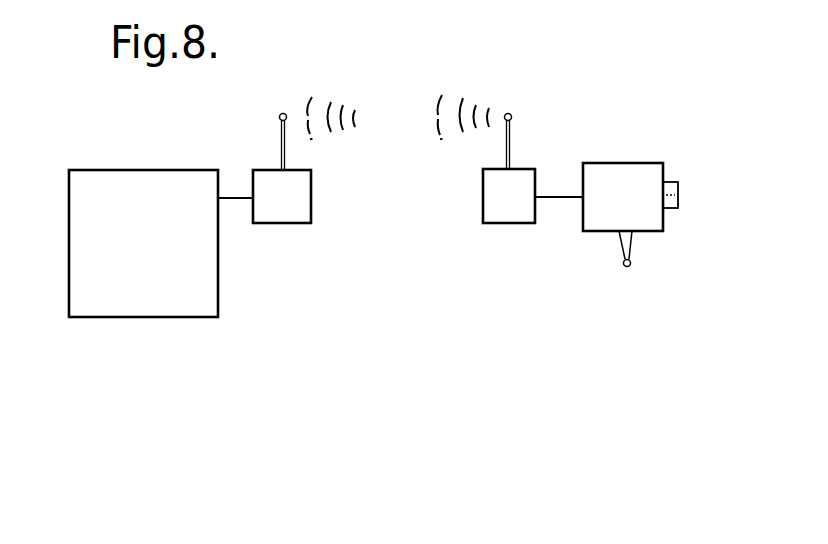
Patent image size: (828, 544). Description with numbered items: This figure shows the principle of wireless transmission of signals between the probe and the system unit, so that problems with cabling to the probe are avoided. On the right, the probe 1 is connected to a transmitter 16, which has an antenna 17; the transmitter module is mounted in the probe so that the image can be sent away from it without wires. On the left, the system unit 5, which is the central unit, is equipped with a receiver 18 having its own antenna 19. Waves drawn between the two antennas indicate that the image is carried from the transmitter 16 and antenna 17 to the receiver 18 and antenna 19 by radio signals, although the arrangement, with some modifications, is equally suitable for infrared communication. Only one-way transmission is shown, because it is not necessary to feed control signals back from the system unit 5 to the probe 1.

The probe 1 is at (628, 178).
The system unit 5 is at (182, 295).
The transmitter 16 is at (517, 212).
The antenna 17 is at (512, 114).
The receiver 18 is at (297, 212).
The antenna 19 is at (285, 113).